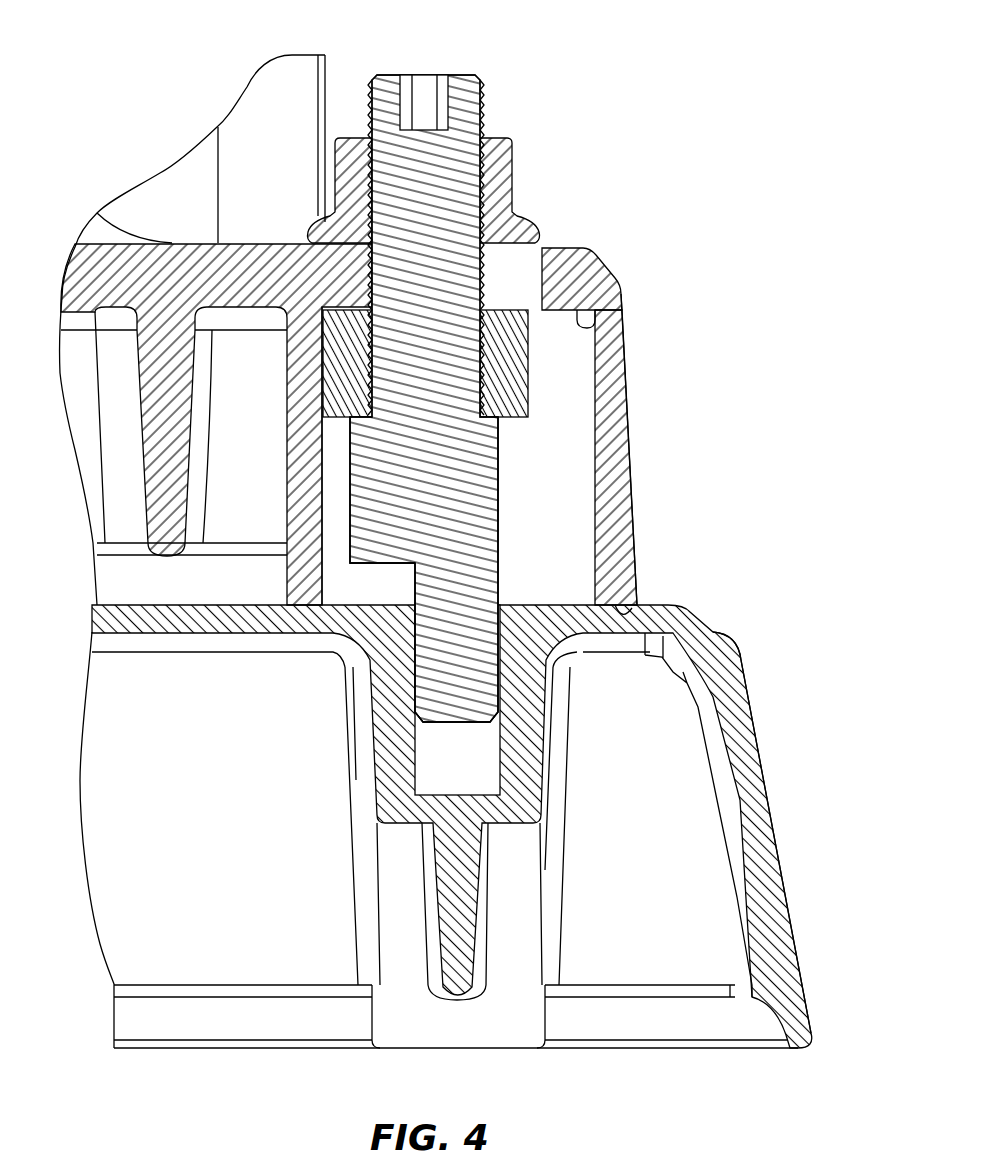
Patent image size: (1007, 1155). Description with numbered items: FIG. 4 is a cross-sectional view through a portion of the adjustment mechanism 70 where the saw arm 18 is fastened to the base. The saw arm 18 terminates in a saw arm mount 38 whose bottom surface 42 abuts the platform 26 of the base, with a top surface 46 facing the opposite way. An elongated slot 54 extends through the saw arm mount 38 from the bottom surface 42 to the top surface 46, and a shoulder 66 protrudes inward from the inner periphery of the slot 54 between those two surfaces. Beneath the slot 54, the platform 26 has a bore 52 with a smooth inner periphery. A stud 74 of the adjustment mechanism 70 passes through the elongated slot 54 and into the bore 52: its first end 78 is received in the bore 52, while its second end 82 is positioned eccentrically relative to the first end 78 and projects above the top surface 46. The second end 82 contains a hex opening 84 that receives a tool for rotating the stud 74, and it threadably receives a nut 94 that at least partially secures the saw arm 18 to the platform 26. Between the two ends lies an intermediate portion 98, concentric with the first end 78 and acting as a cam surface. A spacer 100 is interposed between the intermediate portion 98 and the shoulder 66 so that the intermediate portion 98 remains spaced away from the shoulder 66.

The saw arm 18 is at (278, 72).
The platform 26 is at (762, 800).
The saw arm mount 38 is at (633, 497).
The bottom surface 42 is at (630, 608).
The top surface 46 is at (567, 250).
The bore 52 is at (497, 742).
The elongated slot 54 is at (603, 430).
The shoulder 66 is at (598, 325).
The adjustment mechanism 70 is at (550, 372).
The stud 74 is at (336, 462).
The first end 78 is at (490, 585).
The second end 82 is at (480, 92).
The hex opening 84 is at (408, 75).
The nut 94 is at (508, 170).
The intermediate portion 98 is at (490, 500).
The spacer 100 is at (515, 385).